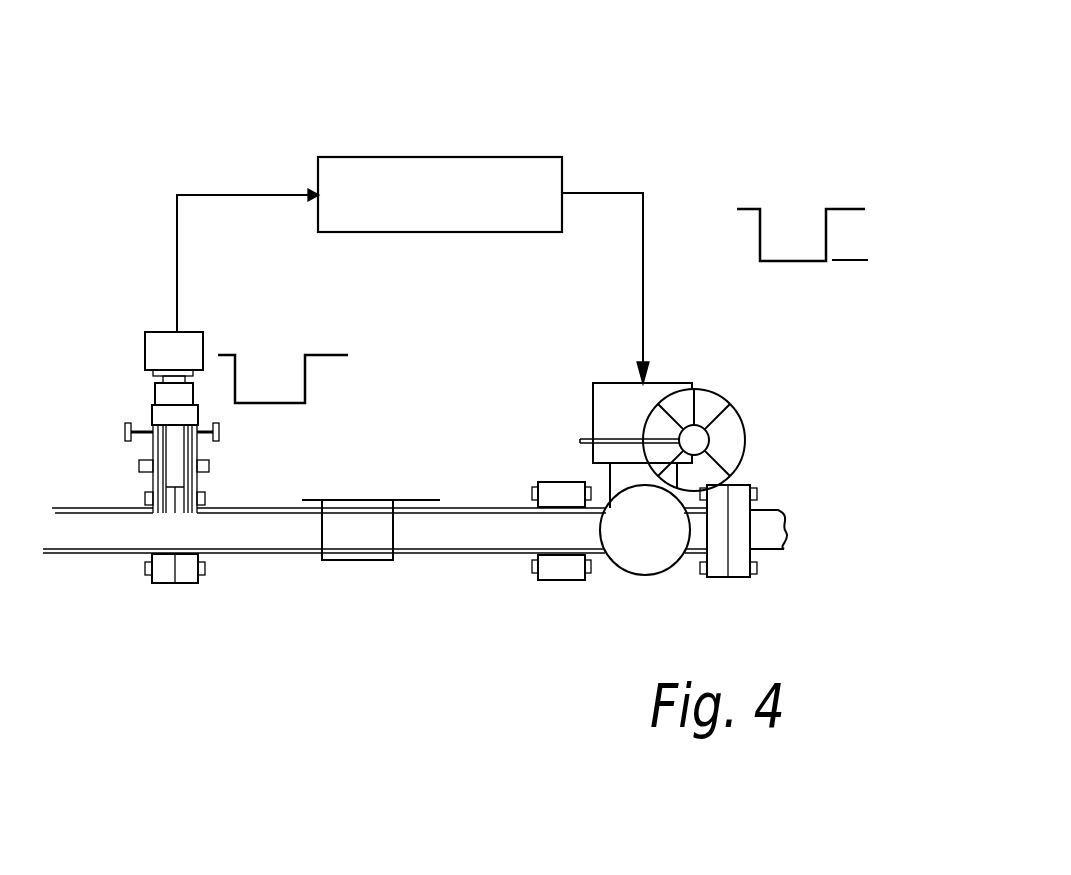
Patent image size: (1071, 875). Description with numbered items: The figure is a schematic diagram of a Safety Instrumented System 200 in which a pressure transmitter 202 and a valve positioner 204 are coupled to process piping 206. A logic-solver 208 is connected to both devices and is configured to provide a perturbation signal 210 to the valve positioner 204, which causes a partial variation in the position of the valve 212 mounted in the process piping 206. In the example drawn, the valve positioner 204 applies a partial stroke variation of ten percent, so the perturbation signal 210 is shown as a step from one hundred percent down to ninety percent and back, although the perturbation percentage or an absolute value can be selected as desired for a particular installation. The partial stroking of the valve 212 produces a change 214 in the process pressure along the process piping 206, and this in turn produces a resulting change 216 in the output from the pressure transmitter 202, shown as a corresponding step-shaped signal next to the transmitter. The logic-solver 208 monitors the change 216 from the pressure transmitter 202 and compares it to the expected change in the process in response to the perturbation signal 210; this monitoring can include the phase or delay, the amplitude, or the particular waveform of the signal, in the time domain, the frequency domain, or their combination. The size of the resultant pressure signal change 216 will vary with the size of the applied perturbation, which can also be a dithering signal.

The Safety Instrumented System 200 is at (708, 151).
The pressure transmitter 202 is at (145, 347).
The valve positioner 204 is at (683, 383).
The process piping 206 is at (73, 556).
The logic-solver 208 is at (350, 157).
The perturbation signal 210 is at (838, 238).
The valve 212 is at (665, 570).
The change in the process pressure 214 is at (367, 560).
The change in the output from pressure transmitter 216 is at (308, 375).